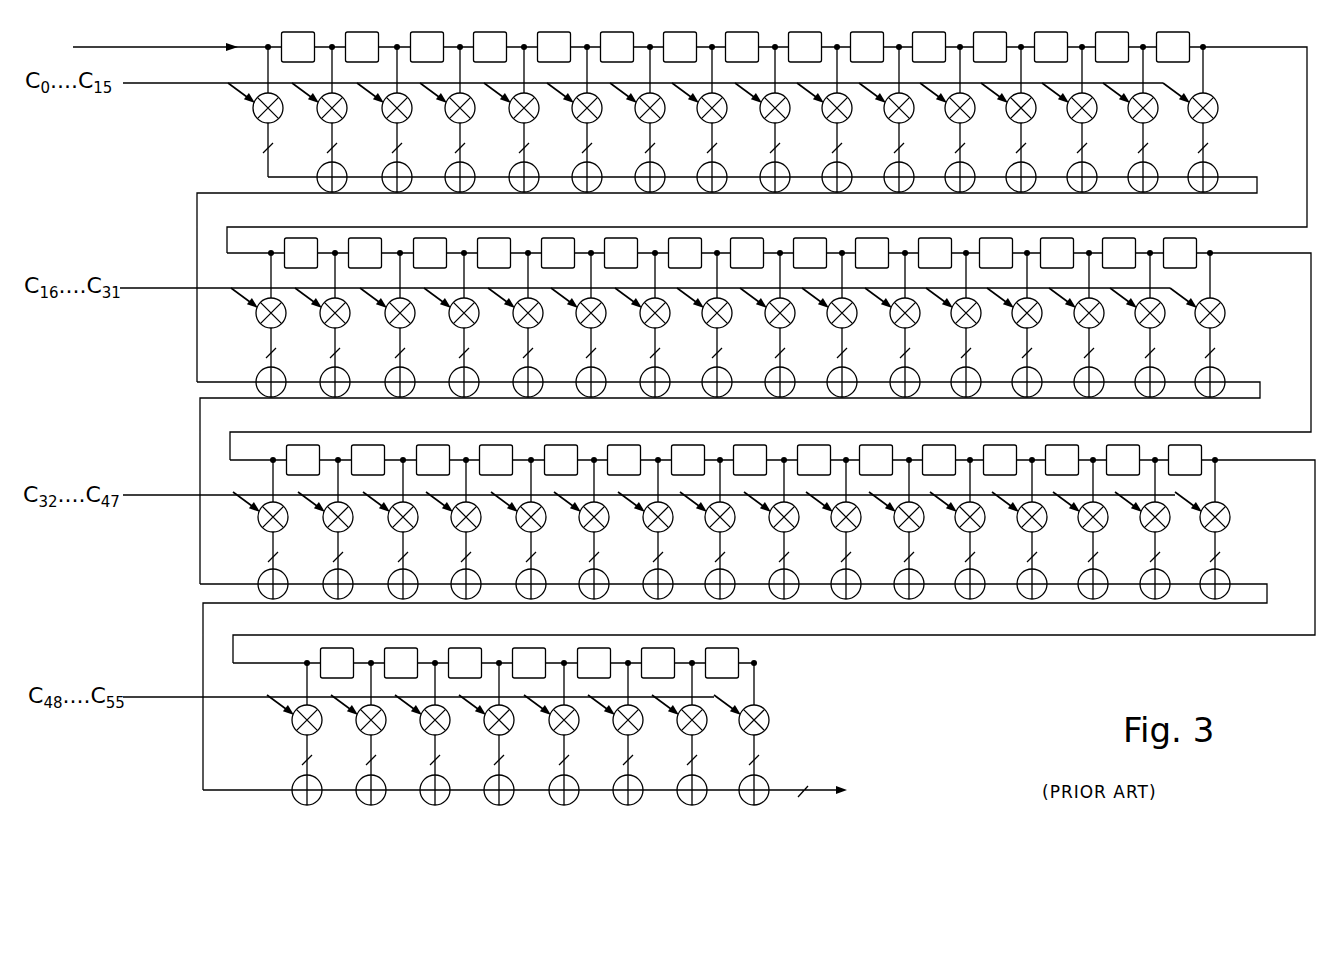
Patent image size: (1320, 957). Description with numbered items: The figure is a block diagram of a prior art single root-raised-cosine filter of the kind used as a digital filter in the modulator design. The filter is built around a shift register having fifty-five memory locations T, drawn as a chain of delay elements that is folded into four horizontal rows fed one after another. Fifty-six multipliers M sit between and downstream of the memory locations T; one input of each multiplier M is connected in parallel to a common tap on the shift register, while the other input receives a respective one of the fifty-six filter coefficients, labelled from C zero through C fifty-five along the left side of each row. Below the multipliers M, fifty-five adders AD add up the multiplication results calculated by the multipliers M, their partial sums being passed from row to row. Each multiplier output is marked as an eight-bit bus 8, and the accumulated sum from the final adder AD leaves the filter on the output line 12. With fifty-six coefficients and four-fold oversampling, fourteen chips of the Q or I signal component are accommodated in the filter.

The multiplier M is at (256, 116).
The adder AD is at (322, 170).
The 8-bit bus width marker 8 is at (749, 447).
The filter output 12 is at (808, 778).
The memory location T is at (733, 355).